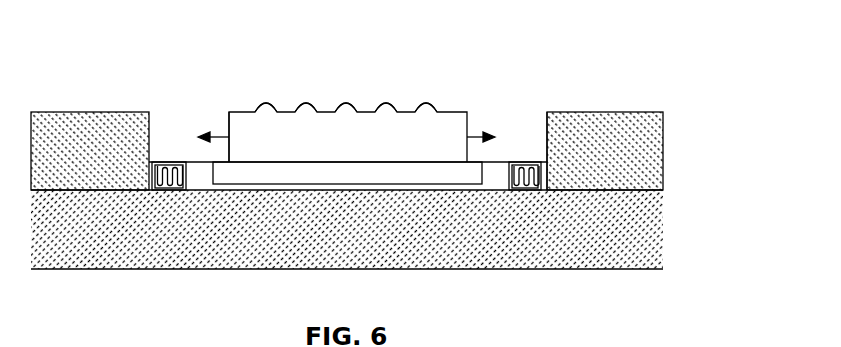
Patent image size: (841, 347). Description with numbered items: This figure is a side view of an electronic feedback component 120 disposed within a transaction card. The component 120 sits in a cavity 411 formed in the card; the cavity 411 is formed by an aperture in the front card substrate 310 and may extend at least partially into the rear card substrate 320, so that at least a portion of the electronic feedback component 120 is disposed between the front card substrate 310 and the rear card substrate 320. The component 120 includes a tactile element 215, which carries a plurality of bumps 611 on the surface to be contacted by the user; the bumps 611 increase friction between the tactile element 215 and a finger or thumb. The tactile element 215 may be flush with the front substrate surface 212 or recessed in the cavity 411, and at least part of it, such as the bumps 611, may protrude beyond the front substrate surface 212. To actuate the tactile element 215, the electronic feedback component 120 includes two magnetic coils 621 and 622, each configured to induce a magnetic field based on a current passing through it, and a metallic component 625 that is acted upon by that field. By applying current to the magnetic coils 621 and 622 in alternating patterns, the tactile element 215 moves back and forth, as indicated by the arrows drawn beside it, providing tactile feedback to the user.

The electronic feedback component 120 is at (402, 87).
The bumps 611 is at (346, 105).
The tactile element 215 is at (228, 111).
The front substrate surface 212 is at (45, 111).
The front card substrate 310 is at (660, 152).
The cavity 411 is at (538, 120).
The rear card substrate 320 is at (660, 242).
The magnetic coil 621 is at (163, 161).
The magnetic coil 622 is at (515, 161).
The metallic component 625 is at (450, 172).